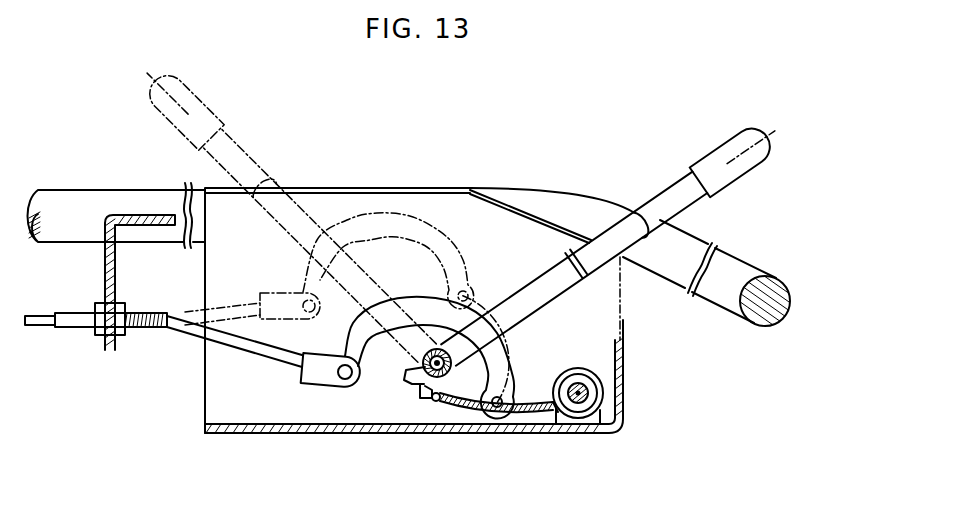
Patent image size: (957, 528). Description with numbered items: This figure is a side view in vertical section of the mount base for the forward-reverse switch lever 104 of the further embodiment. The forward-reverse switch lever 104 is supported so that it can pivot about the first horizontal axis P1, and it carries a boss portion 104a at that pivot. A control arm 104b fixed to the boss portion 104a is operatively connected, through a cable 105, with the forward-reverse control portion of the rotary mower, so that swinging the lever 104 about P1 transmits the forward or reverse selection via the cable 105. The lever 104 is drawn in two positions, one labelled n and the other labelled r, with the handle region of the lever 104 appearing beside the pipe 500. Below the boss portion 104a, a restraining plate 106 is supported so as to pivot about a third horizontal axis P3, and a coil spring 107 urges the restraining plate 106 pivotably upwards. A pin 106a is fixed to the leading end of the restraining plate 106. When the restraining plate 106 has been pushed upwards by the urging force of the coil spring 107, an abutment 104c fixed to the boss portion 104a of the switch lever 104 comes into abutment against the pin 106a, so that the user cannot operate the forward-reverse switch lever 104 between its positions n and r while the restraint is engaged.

The forward-reverse switch lever 104 is at (262, 168).
The boss portion 104a is at (414, 369).
The control arm 104b is at (507, 396).
The abutment 104c is at (421, 386).
The cable 105 is at (190, 336).
The restraining plate 106 is at (468, 412).
The pin 106a is at (437, 403).
The coil spring 107 is at (603, 372).
The handle pipe 500 is at (745, 263).
The first horizontal axis P1 is at (430, 360).
The third horizontal axis P3 is at (584, 405).
The neutral position n is at (775, 131).
The reverse position r is at (147, 73).